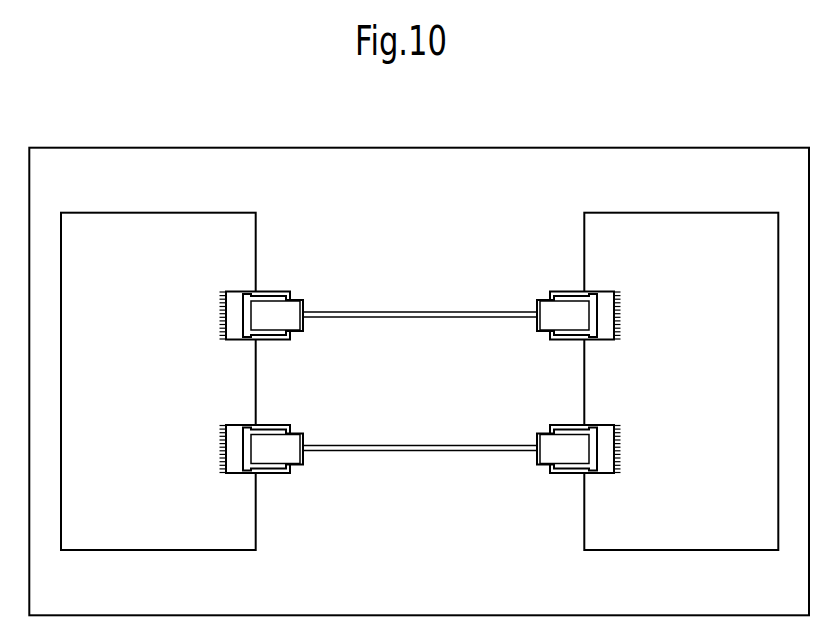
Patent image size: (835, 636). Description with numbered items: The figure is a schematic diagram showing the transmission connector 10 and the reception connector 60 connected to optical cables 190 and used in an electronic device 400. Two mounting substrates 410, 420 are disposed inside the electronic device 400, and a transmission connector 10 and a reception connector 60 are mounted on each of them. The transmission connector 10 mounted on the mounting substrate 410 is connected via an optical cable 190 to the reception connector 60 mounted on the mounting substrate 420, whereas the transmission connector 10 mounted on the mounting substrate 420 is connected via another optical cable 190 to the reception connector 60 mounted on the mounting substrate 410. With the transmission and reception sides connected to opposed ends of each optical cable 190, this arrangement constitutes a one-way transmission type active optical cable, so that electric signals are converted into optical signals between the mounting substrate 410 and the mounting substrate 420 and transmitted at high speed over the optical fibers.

The electronic device 400 is at (501, 147).
The mounting substrate 410 is at (240, 242).
The mounting substrate 420 is at (600, 242).
The transmission connector 10 is at (299, 289).
The reception connector 60 is at (542, 289).
The optical cable 190 is at (388, 318).